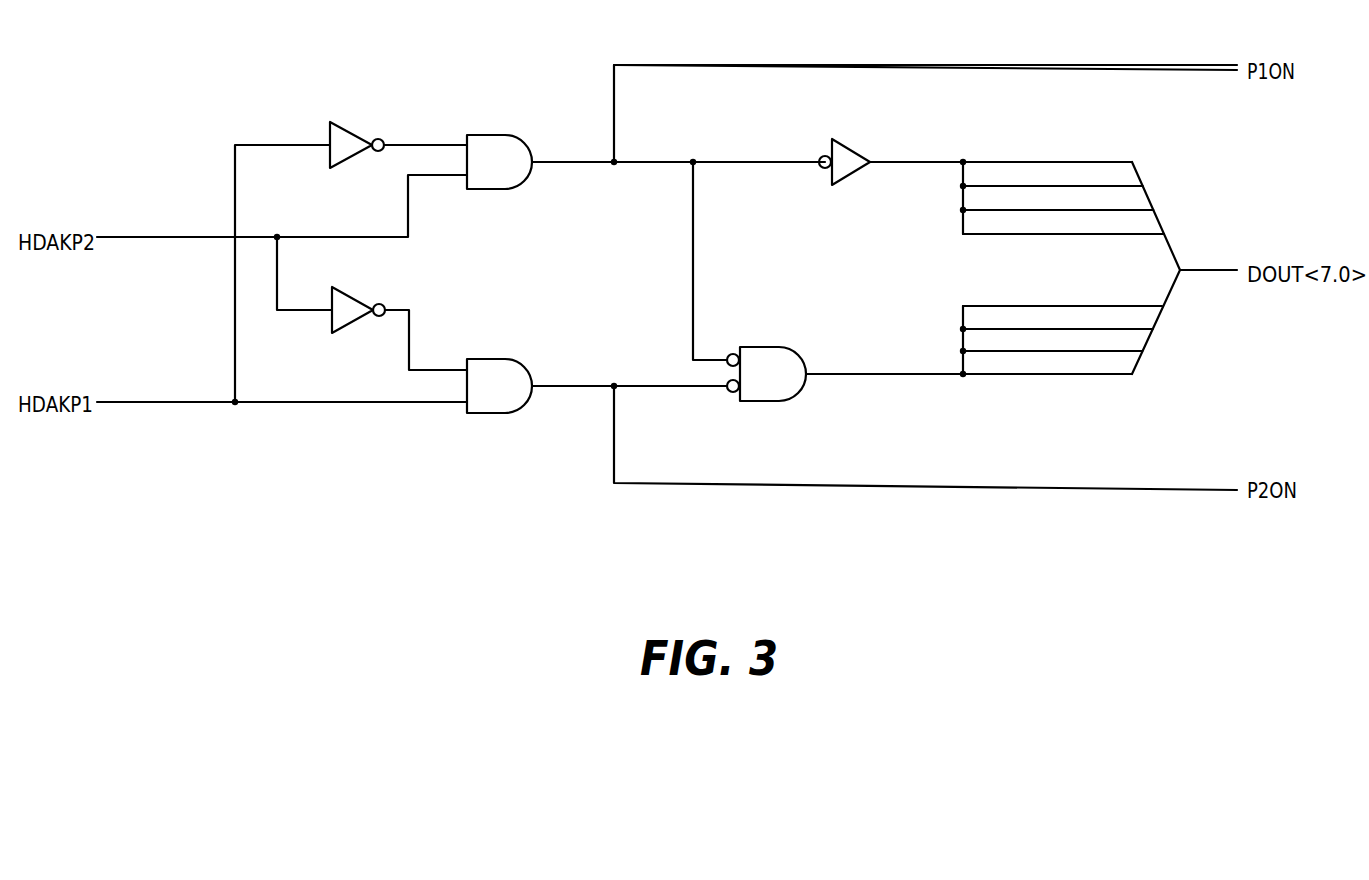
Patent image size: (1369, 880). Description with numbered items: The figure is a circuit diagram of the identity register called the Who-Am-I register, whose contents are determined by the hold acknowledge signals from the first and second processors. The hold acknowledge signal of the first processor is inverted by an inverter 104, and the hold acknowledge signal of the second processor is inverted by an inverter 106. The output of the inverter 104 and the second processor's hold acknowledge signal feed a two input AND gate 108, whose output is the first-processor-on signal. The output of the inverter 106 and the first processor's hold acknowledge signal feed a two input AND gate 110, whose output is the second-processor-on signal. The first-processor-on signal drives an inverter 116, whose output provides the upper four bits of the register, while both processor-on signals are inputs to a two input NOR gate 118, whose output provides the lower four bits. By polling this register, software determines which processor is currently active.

The inverter 104 is at (348, 125).
The inverter 106 is at (349, 290).
The two input AND gate 108 is at (487, 134).
The two input AND gate 110 is at (490, 358).
The inverter 116 is at (845, 143).
The two input NOR gate 118 is at (762, 347).